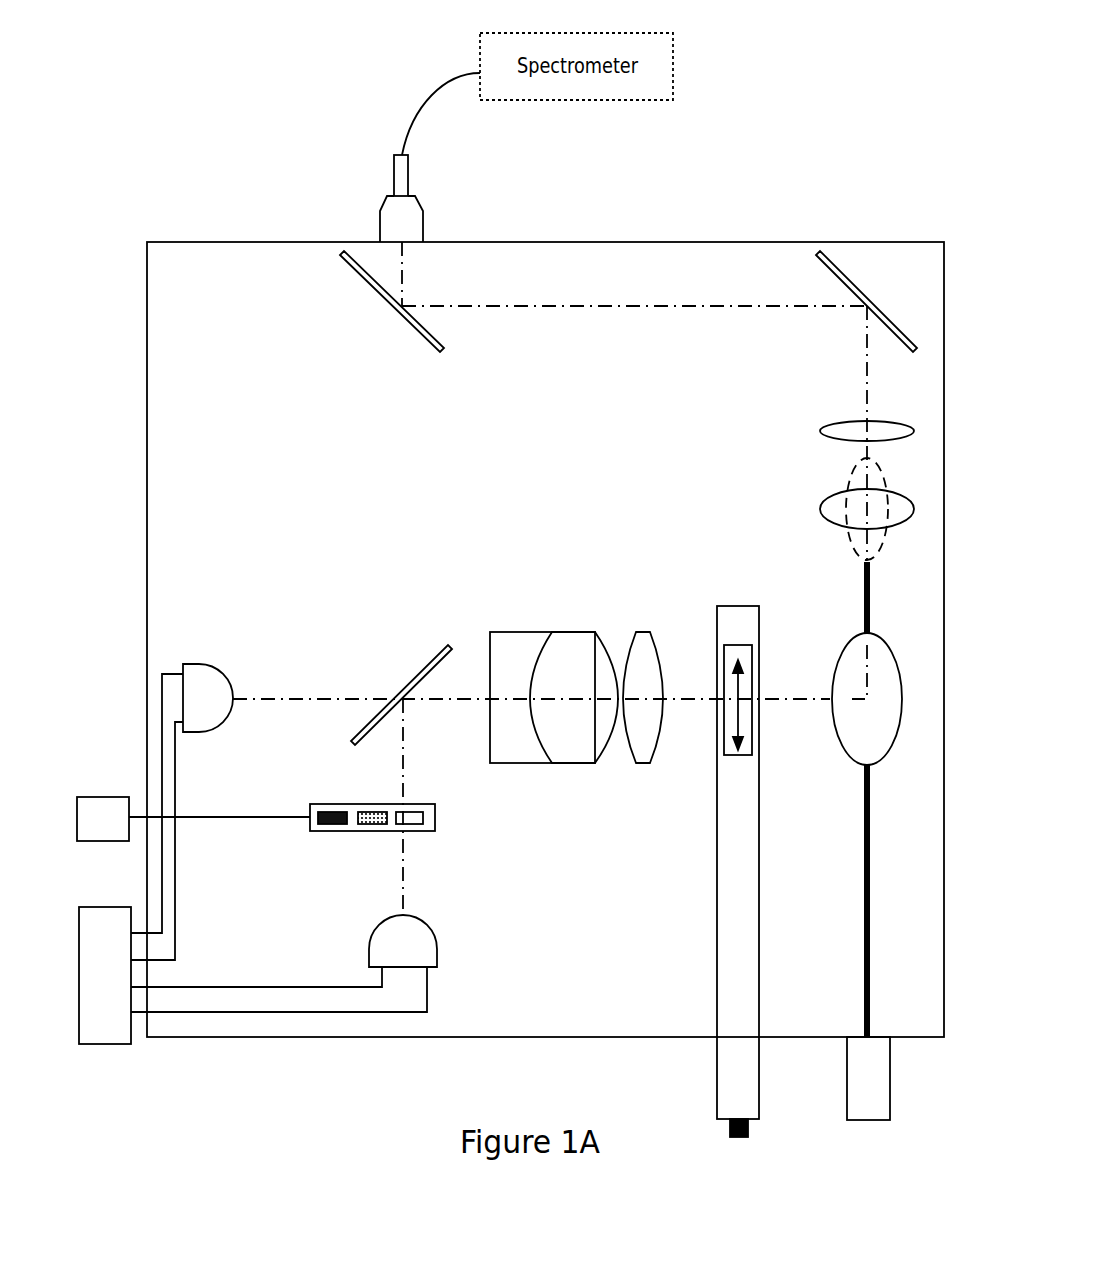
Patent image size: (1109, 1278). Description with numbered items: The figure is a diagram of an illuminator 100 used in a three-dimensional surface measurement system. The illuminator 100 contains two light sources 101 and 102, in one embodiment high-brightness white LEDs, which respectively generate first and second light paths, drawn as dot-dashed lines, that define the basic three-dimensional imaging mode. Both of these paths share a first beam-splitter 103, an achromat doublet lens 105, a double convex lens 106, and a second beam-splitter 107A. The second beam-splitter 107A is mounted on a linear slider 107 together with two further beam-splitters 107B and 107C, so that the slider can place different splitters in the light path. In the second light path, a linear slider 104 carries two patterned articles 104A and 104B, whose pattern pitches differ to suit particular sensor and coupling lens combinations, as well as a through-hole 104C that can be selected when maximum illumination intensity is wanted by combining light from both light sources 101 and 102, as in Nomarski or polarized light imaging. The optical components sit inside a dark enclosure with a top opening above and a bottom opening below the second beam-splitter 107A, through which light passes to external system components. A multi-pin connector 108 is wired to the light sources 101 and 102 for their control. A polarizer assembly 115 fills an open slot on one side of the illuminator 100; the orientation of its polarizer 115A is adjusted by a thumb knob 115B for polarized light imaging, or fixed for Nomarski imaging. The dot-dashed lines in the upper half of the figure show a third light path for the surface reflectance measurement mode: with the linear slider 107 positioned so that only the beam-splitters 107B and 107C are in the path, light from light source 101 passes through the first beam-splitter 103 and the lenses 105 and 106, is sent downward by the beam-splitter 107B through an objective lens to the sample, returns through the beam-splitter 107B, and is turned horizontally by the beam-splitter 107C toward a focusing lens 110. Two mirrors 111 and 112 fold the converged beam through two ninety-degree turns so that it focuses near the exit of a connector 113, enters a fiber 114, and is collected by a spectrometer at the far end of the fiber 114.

The illuminator 100 is at (242, 434).
The light source 101 is at (223, 681).
The light source 102 is at (435, 941).
The first beam-splitter 103 is at (401, 687).
The linear slider 104 is at (256, 819).
The patterned article 104A is at (336, 831).
The patterned article 104B is at (370, 831).
The through-hole 104C is at (408, 831).
The achromat doublet lens 105 is at (554, 681).
The double convex lens 106 is at (643, 681).
The linear slider 107 is at (893, 841).
The second beam-splitter 107A is at (849, 708).
The beam-splitter 107B is at (835, 579).
The beam-splitter 107C is at (837, 509).
The multi-pin connector 108 is at (253, 859).
The focusing lens 110 is at (839, 431).
The mirror 111 is at (866, 301).
The mirror 112 is at (392, 301).
The connector 113 is at (429, 198).
The fiber 114 is at (441, 114).
The polarizer assembly 115 is at (717, 943).
The polarizer 115A is at (801, 644).
The thumb knob 115B is at (737, 1143).